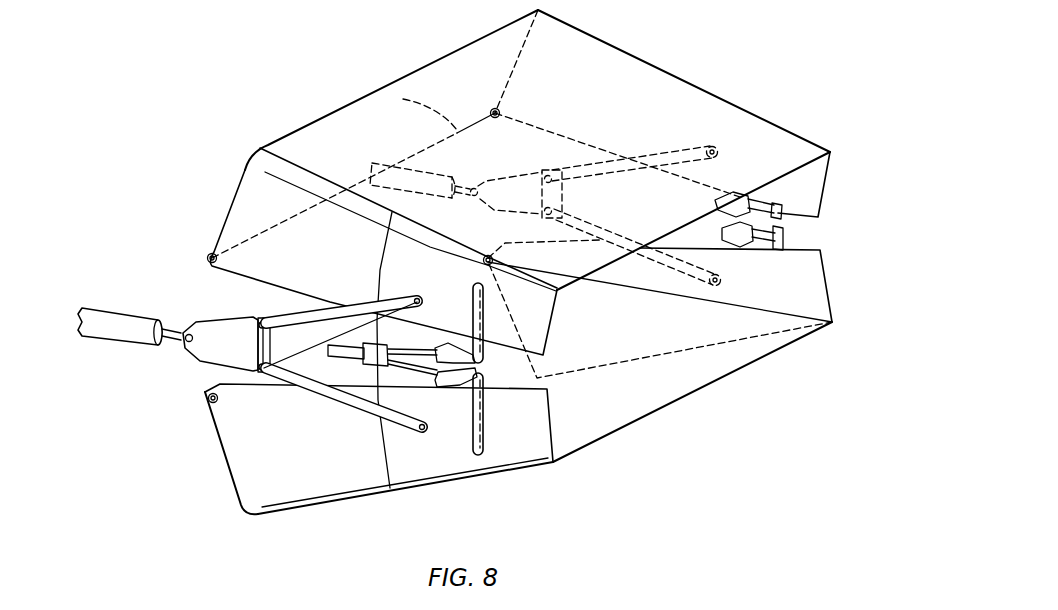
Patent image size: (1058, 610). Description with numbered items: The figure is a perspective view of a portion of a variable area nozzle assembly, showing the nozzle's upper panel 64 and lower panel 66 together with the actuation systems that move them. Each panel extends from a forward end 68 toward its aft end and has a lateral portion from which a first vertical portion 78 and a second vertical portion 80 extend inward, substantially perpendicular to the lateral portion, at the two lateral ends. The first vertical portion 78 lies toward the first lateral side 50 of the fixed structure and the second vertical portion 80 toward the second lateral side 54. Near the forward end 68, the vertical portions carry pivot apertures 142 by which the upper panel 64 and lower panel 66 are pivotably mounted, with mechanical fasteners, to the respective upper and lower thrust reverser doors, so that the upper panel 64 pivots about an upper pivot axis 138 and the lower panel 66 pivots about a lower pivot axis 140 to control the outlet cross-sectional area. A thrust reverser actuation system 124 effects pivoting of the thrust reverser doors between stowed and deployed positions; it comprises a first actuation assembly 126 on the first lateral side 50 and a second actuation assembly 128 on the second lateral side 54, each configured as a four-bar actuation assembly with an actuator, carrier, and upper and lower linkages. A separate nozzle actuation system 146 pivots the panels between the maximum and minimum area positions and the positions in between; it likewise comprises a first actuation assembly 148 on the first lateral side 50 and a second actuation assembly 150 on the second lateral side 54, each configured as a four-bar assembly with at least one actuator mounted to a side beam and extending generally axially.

The first lateral side 50 is at (337, 459).
The second lateral side 54 is at (790, 119).
The upper panel 64 is at (647, 123).
The lower panel 66 is at (634, 412).
The forward end 68 is at (187, 246).
The first vertical portion 78 is at (238, 204).
The second vertical portion 80 is at (816, 176).
The thrust reverser actuation system 124 is at (102, 353).
The first actuation assembly 126 is at (238, 302).
The second actuation assembly 128 is at (680, 124).
The upper pivot axis 138 is at (400, 97).
The lower pivot axis 140 is at (312, 385).
The pivot apertures 142 is at (513, 112).
The nozzle actuation system 146 is at (494, 423).
The first actuation assembly 148 is at (460, 440).
The second actuation assembly 150 is at (812, 231).